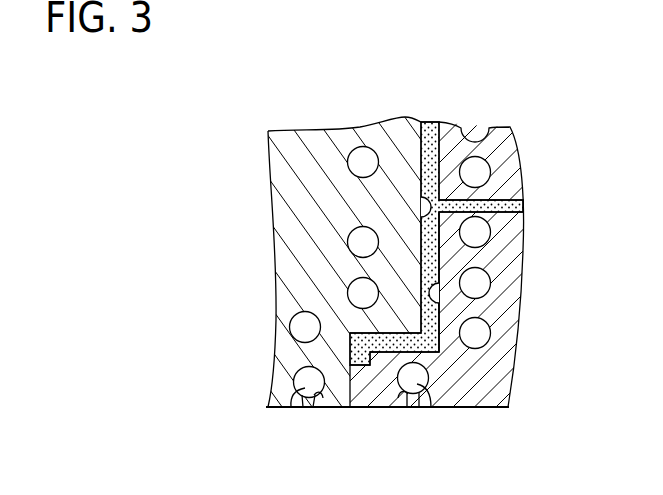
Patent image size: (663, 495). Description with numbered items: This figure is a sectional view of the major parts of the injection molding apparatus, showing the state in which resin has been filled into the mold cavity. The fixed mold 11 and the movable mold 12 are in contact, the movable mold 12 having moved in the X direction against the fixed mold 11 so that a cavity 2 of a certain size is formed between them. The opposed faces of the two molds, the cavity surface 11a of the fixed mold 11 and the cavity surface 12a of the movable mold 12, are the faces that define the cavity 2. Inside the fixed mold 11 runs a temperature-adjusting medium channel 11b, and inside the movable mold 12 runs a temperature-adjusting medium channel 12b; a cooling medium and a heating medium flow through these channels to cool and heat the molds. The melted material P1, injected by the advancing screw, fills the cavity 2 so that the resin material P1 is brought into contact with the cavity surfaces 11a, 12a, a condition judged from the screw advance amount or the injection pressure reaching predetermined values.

The fixed mold 11 is at (498, 128).
The movable mold 12 is at (305, 129).
The cavity surface 11a is at (440, 300).
The cavity surface 12a is at (421, 203).
The temperature-adjusting medium channel 11b is at (432, 408).
The temperature-adjusting medium channel 12b is at (291, 408).
The melted material P1 is at (429, 126).
The cavity 2 is at (438, 264).